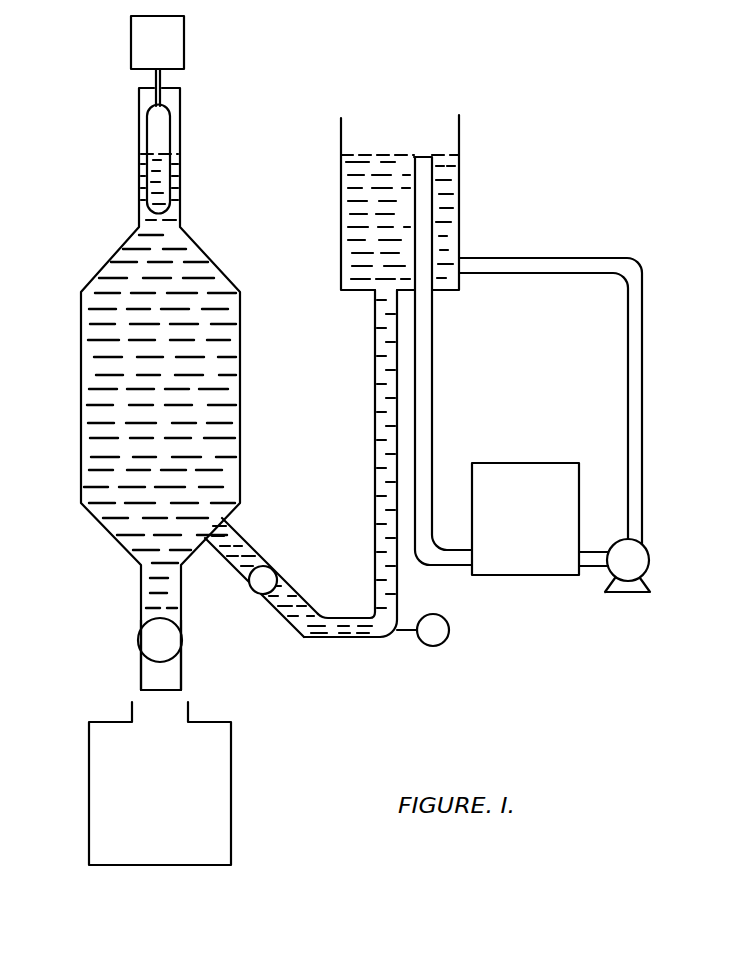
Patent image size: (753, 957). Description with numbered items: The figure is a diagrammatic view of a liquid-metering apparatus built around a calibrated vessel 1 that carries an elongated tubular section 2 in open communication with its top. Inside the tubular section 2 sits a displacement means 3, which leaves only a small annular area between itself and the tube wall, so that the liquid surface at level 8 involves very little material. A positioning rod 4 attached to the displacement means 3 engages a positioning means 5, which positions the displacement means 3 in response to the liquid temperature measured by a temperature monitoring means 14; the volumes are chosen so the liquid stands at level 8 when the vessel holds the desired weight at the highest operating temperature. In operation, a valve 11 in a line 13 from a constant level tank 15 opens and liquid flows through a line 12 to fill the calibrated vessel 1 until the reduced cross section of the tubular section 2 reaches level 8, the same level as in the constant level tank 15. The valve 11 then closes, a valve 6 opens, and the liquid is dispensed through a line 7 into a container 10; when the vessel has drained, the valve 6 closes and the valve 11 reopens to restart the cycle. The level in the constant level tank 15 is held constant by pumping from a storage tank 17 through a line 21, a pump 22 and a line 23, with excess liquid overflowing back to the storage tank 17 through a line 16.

The calibrated vessel 1 is at (80, 398).
The elongated tubular section 2 is at (139, 180).
The displacement means 3 is at (147, 110).
The positioning rod 4 is at (162, 80).
The positioning means 5 is at (184, 50).
The valve 6 is at (138, 645).
The line 7 is at (182, 672).
The level 8 is at (341, 153).
The container 10 is at (232, 758).
The valve 11 is at (277, 577).
The line 12 is at (252, 555).
The line 13 is at (332, 618).
The temperature monitoring means 14 is at (437, 646).
The constant level tank 15 is at (341, 253).
The line 16 is at (433, 155).
The storage tank 17 is at (532, 567).
The line 21 is at (607, 548).
The pump 22 is at (648, 590).
The line 23 is at (627, 394).